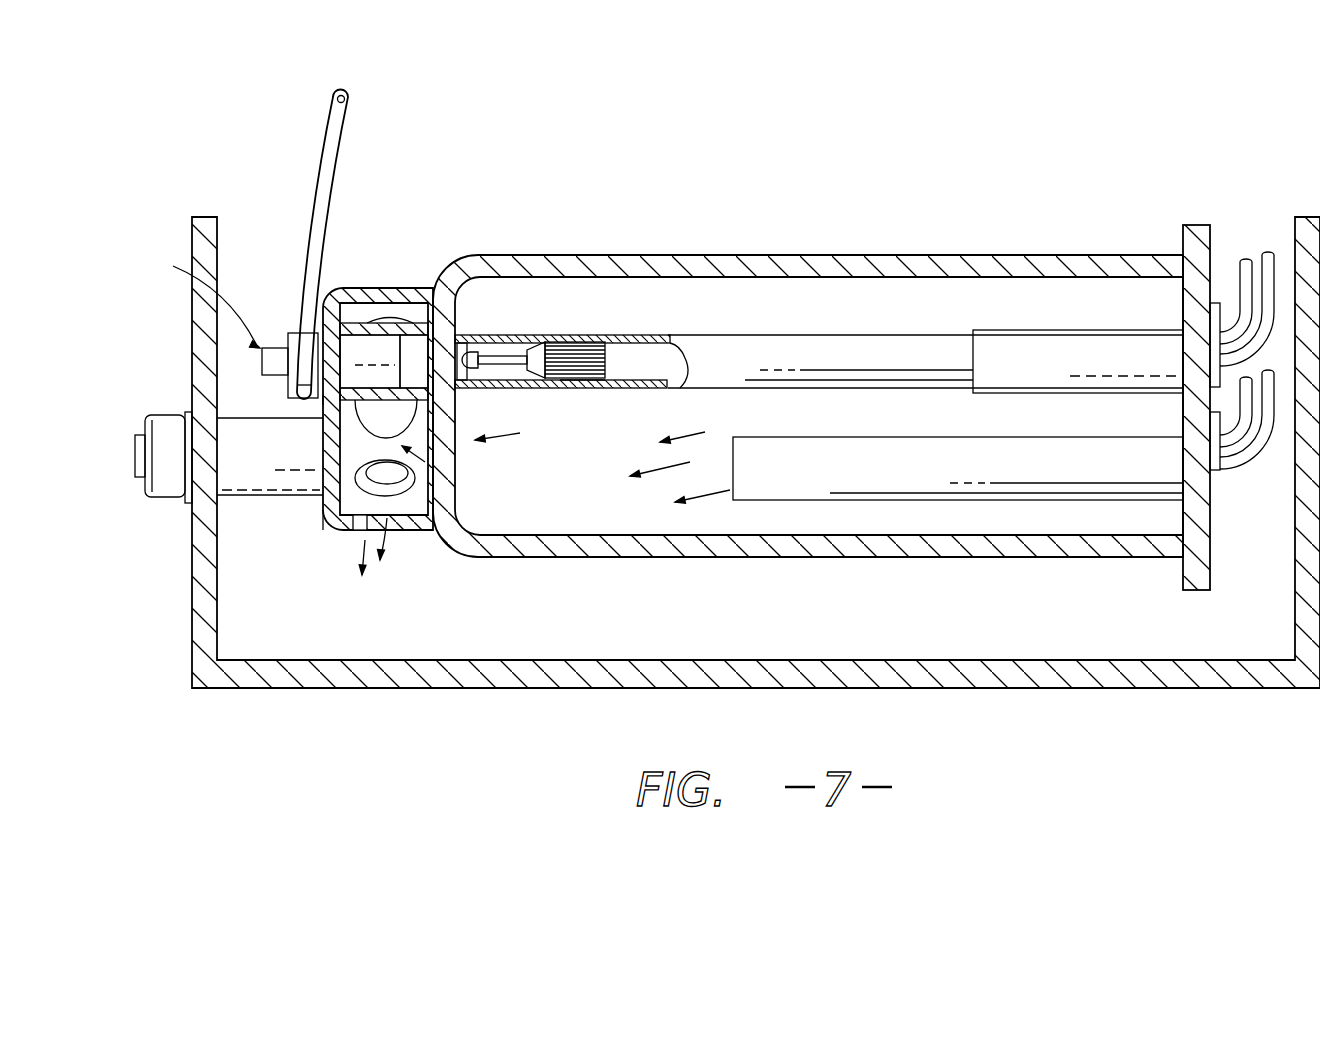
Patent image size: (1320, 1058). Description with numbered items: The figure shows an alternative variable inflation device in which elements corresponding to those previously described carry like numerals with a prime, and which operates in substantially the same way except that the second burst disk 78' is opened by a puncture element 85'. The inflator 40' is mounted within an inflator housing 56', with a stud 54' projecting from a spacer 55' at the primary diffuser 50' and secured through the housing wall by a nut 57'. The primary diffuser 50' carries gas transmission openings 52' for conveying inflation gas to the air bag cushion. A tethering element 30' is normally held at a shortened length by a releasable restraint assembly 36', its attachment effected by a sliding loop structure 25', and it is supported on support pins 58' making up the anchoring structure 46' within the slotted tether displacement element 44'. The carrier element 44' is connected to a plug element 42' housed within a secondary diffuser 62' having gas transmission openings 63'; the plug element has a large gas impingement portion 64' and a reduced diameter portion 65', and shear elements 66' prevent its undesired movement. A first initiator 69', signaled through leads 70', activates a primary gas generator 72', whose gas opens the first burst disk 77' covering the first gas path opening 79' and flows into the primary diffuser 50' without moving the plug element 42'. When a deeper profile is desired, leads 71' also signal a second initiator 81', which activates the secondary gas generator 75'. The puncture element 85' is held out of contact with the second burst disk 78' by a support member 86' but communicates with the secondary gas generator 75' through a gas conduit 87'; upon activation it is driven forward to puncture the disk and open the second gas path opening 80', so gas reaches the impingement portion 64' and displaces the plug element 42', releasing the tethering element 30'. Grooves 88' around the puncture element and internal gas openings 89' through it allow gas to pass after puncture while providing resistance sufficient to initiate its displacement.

The tethering element 30' is at (353, 233).
The plug element 42' is at (378, 358).
The gas transmission openings 63' is at (432, 330).
The shear elements 66' is at (418, 276).
The reduced diameter portion 65' is at (370, 314).
The anchoring structure 46' is at (201, 292).
The releasable restraint assembly 36' is at (283, 333).
The support pins 58' is at (206, 335).
The sliding loop structure 25' is at (205, 358).
The tether displacement element 44' is at (229, 386).
The stud 54' is at (138, 447).
The nut 57' is at (150, 474).
The spacer 55' is at (226, 509).
The primary diffuser 50' is at (305, 550).
The gas transmission openings 52' is at (393, 572).
The second gas path opening 80' is at (486, 327).
The second burst disk 78' is at (519, 325).
The support member 86' is at (568, 332).
The puncture element 85' is at (568, 337).
The grooves 88' is at (677, 342).
The gas conduit 87' is at (925, 342).
The secondary gas generator 75' is at (1078, 343).
The second initiator 81' is at (1208, 383).
The leads 71' is at (1259, 276).
The gas impingement portion 64' is at (530, 388).
The internal gas openings 89' is at (609, 400).
The secondary diffuser 62' is at (482, 451).
The first burst disk 77' is at (429, 457).
The first gas path opening 79' is at (454, 481).
The leads 70' is at (1255, 449).
The first initiator 69' is at (1237, 492).
The primary gas generator 72' is at (958, 528).
The inflator 40' is at (808, 437).
The inflator housing 56' is at (756, 473).